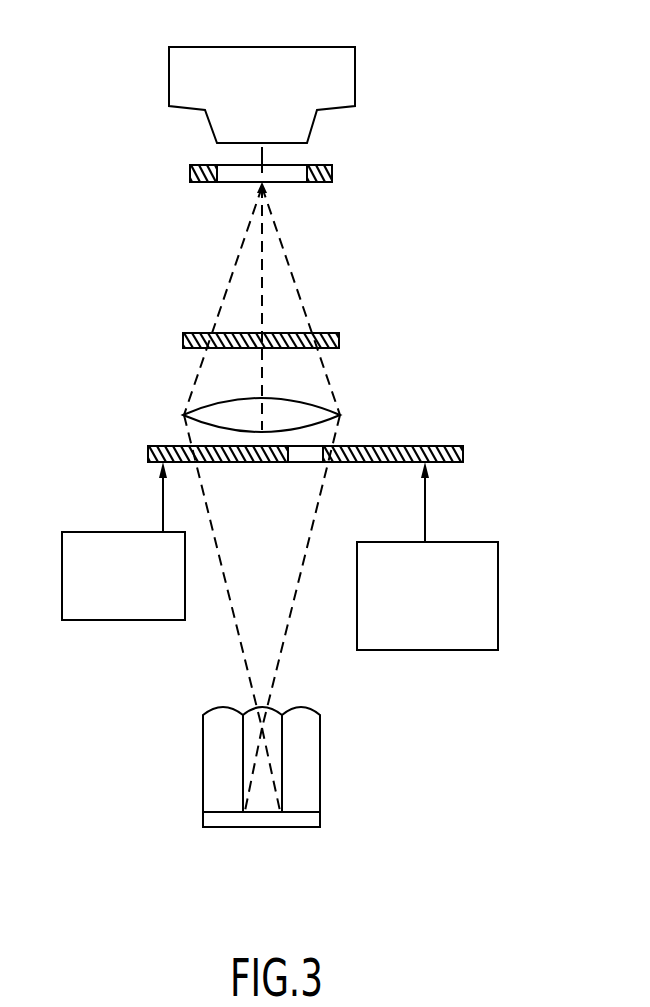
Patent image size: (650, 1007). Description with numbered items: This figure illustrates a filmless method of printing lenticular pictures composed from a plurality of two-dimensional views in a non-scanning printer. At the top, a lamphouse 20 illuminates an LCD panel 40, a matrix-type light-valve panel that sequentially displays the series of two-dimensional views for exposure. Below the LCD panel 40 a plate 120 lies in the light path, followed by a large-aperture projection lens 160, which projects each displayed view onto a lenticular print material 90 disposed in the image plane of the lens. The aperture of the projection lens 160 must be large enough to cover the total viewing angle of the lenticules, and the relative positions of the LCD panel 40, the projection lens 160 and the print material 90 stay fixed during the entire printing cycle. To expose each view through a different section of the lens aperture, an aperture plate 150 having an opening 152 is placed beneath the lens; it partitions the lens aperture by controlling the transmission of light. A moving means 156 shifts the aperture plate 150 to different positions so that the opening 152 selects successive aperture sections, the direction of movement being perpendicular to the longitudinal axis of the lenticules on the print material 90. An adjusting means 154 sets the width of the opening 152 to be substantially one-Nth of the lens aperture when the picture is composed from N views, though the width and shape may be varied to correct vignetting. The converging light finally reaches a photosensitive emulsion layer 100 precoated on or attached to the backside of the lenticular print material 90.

The lamphouse 20 is at (342, 70).
The LCD panel 40 is at (317, 163).
The filter plate 120 is at (323, 333).
The projection lens 160 is at (320, 410).
The aperture plate 150 is at (447, 445).
The opening 152 is at (312, 458).
The moving means 156 is at (152, 608).
The adjusting means 154 is at (483, 642).
The lenticular print material 90 is at (310, 715).
The photosensitive emulsion layer 100 is at (320, 818).